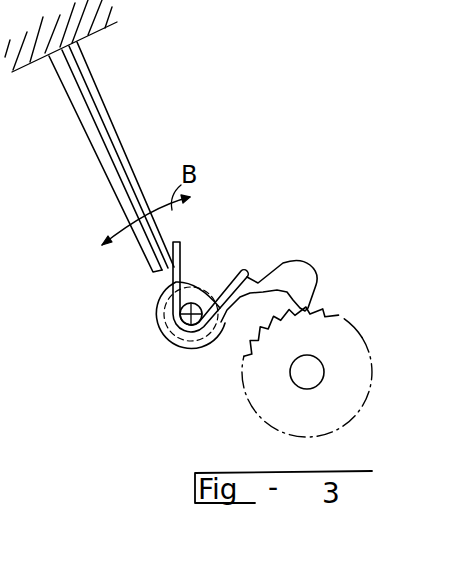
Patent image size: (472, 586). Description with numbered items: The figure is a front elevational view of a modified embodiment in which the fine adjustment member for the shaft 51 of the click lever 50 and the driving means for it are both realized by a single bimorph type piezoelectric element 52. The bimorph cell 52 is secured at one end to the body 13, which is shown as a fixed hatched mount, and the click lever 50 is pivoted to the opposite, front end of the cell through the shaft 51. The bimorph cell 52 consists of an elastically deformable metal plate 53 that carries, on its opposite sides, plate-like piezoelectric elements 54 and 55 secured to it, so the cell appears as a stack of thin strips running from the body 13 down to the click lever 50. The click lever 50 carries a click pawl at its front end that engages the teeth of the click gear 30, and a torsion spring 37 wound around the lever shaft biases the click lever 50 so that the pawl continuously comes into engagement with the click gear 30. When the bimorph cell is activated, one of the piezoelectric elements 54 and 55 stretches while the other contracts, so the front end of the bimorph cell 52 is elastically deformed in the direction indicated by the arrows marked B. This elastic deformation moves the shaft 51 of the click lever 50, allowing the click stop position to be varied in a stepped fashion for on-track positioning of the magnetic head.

The body 13 is at (107, 24).
The click gear 30 is at (334, 332).
The torsion spring 37 is at (177, 294).
The click lever 50 is at (282, 278).
The shaft 51 is at (188, 353).
The bimorph type piezoelectric element 52 is at (125, 157).
The elastically deformable metal plate 53 is at (104, 144).
The piezoelectric element 54 is at (127, 158).
The piezoelectric element 55 is at (122, 200).